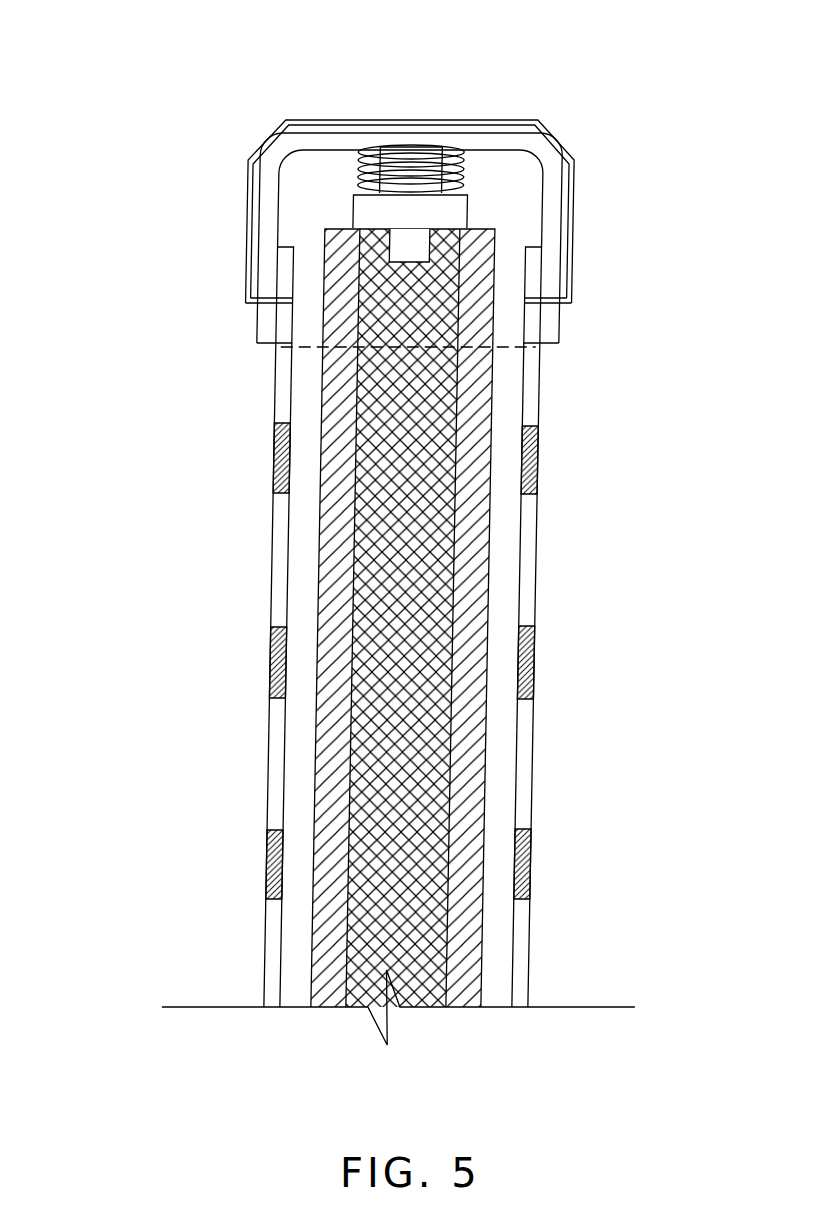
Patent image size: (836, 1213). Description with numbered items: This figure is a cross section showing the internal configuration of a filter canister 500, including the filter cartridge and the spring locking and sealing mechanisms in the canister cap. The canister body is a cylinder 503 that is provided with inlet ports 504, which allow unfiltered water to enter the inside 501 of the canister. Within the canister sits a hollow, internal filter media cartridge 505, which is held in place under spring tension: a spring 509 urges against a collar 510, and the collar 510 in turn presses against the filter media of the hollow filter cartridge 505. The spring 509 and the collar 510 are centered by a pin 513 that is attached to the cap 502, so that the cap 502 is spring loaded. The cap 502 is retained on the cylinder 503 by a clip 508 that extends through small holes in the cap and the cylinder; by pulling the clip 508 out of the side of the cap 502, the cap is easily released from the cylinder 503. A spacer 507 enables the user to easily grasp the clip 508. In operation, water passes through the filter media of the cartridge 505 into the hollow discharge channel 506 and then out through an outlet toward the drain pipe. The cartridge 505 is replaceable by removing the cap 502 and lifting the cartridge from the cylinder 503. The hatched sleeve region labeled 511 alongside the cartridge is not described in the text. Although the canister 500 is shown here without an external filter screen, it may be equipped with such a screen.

The filter canister 500 is at (551, 574).
The inside of the canister 501 is at (513, 946).
The cap 502 is at (510, 143).
The cylinder 503 is at (265, 767).
The inlet ports 504 is at (540, 462).
The filter media cartridge 505 is at (320, 572).
The hollow discharge channel 506 is at (392, 312).
The spacer 507 is at (580, 233).
The clip 508 is at (337, 118).
The spring 509 is at (448, 152).
The collar 510 is at (473, 205).
The core sleeve 511 is at (340, 423).
The pin 513 is at (412, 147).